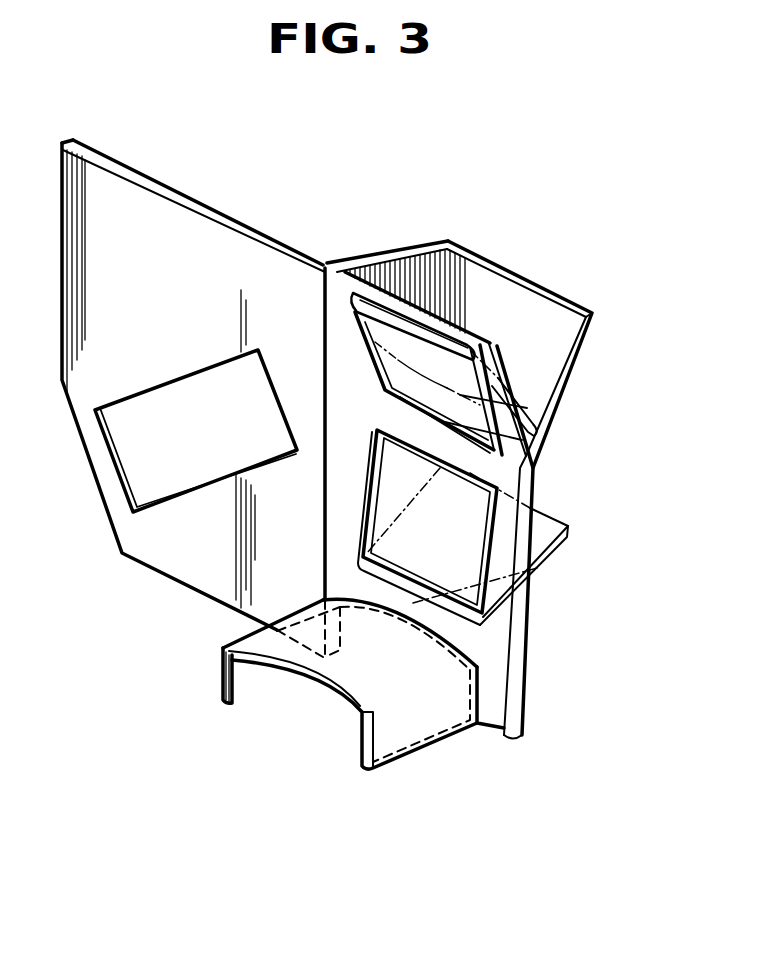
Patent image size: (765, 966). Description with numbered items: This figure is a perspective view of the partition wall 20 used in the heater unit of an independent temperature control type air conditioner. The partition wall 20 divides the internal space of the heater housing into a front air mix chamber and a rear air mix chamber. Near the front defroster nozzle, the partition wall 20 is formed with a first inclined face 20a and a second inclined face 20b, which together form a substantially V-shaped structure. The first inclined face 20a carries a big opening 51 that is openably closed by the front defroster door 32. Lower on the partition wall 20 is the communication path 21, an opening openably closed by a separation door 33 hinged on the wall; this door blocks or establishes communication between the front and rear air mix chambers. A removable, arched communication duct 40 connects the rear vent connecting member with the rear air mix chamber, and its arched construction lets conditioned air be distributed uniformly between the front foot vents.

The partition wall 20 is at (515, 482).
The first inclined face 20a is at (523, 437).
The second inclined face 20b is at (583, 350).
The communication path 21 is at (372, 440).
The front defroster door 32 is at (528, 408).
The separation door 33 is at (533, 565).
The communication duct 40 is at (443, 713).
The big opening 51 is at (357, 330).